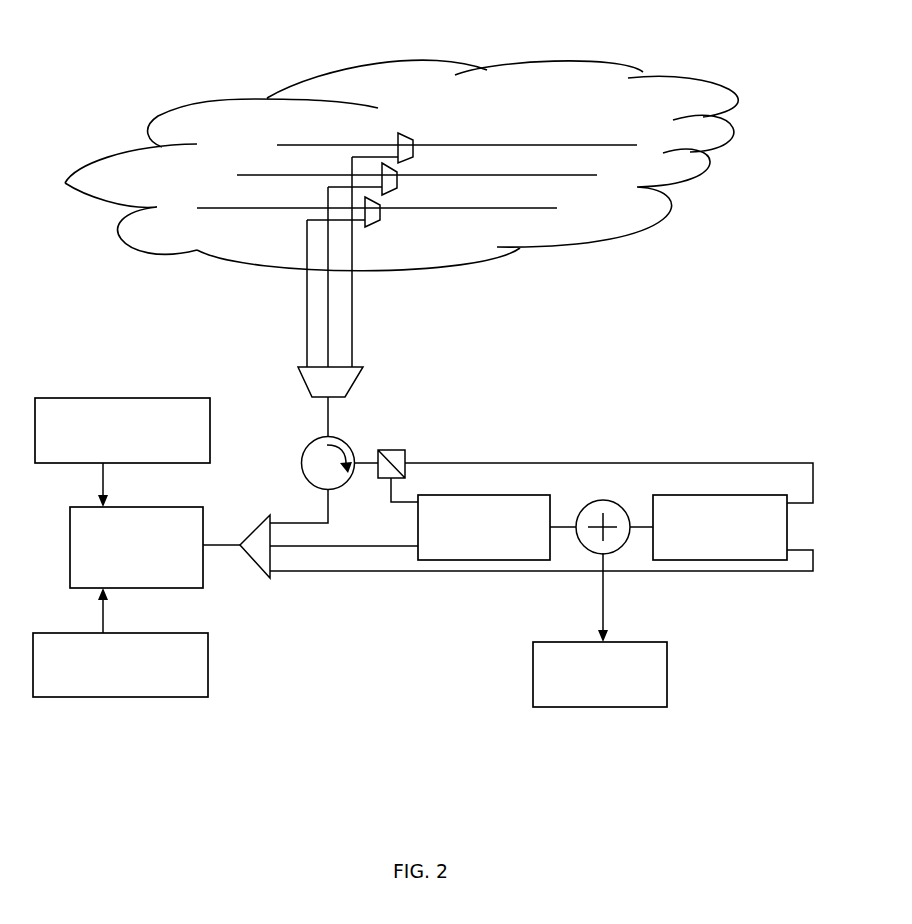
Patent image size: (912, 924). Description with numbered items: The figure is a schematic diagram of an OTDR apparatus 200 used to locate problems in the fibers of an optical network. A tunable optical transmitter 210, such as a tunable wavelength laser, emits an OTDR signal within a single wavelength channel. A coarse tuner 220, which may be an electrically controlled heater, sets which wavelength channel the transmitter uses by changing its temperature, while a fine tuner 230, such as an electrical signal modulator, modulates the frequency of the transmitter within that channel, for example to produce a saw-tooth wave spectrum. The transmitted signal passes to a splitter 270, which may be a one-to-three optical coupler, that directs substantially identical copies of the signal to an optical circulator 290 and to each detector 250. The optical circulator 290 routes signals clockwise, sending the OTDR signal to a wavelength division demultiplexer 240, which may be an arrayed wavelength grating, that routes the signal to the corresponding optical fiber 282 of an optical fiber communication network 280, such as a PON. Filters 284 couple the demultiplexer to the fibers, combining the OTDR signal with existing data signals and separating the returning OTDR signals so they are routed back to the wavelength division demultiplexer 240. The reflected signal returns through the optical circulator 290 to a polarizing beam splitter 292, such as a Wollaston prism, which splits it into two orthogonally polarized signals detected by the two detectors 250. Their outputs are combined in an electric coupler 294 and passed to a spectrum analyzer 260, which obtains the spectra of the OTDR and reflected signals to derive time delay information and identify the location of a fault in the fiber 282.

The OTDR apparatus 200 is at (693, 740).
The tunable optical transmitter 210 is at (198, 505).
The coarse tuner 220 is at (203, 395).
The fine tuner 230 is at (192, 700).
The wavelength division demultiplexer 240 is at (360, 370).
The detector 250 is at (547, 493).
The spectrum analyzer 260 is at (665, 640).
The splitter 270 is at (272, 583).
The optical fiber communication network 280 is at (400, 63).
The optical fiber 282 is at (594, 143).
The filter 284 is at (413, 153).
The optical circulator 290 is at (342, 441).
The polarizing beam splitter 292 is at (406, 451).
The coupler 294 is at (608, 500).